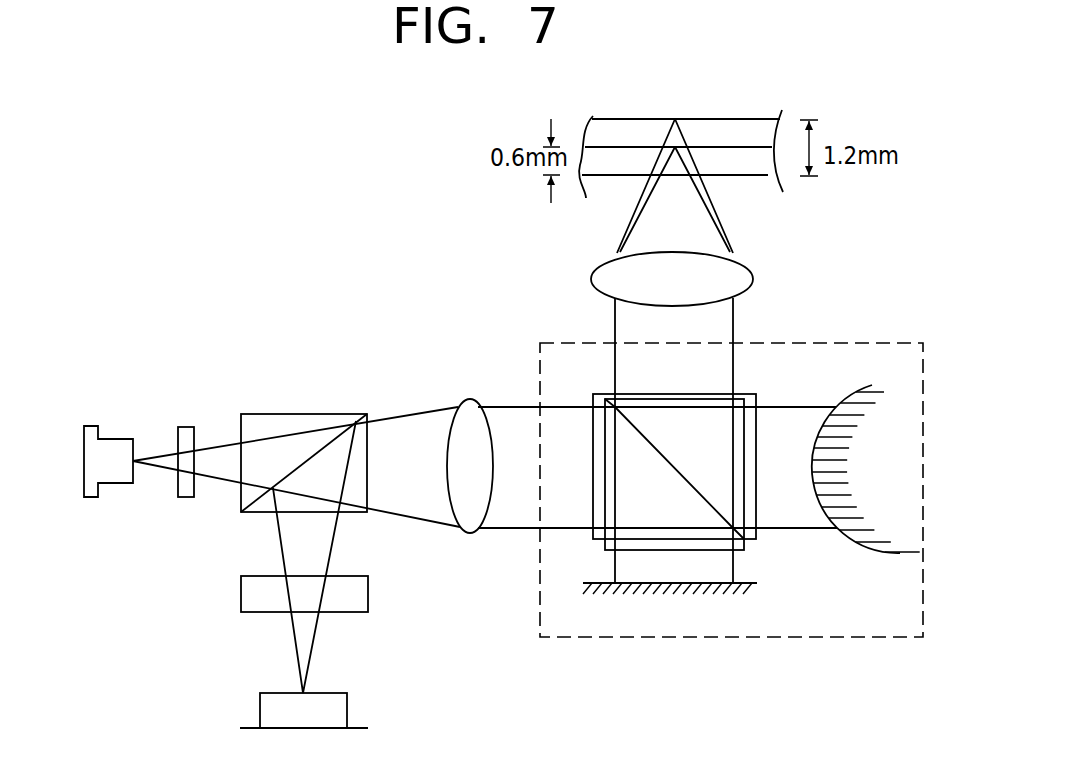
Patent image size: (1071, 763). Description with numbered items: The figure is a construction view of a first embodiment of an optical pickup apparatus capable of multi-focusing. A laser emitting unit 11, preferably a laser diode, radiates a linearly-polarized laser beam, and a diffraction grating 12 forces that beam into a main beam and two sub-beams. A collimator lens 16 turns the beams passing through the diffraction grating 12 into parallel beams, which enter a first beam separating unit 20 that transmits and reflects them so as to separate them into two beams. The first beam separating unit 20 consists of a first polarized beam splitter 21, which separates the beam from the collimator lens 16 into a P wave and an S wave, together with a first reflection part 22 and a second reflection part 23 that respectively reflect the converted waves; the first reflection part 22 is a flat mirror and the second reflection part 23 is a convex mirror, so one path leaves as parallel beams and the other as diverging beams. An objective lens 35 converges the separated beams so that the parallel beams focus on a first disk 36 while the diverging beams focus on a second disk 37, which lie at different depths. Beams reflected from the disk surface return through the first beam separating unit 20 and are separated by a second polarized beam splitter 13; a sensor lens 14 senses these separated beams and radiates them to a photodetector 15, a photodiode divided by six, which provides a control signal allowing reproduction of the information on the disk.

The laser emitting unit 11 is at (120, 439).
The diffraction grating 12 is at (187, 427).
The second polarized beam splitter 13 is at (303, 414).
The sensor lens 14 is at (368, 596).
The photodetector 15 is at (347, 710).
The collimator lens 16 is at (470, 398).
The first beam separating unit 20 is at (866, 343).
The first polarized beam splitter 21 is at (636, 396).
The first reflection part 22 is at (757, 583).
The second reflection part 23 is at (840, 535).
The objective lens 35 is at (755, 279).
The first disk 36 is at (763, 174).
The second disk 37 is at (612, 118).